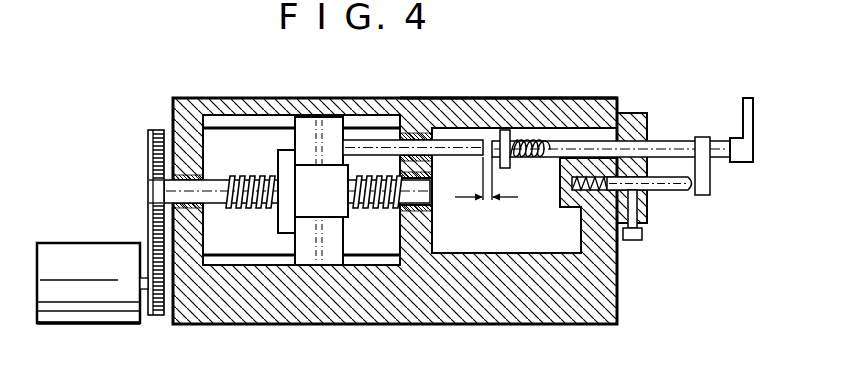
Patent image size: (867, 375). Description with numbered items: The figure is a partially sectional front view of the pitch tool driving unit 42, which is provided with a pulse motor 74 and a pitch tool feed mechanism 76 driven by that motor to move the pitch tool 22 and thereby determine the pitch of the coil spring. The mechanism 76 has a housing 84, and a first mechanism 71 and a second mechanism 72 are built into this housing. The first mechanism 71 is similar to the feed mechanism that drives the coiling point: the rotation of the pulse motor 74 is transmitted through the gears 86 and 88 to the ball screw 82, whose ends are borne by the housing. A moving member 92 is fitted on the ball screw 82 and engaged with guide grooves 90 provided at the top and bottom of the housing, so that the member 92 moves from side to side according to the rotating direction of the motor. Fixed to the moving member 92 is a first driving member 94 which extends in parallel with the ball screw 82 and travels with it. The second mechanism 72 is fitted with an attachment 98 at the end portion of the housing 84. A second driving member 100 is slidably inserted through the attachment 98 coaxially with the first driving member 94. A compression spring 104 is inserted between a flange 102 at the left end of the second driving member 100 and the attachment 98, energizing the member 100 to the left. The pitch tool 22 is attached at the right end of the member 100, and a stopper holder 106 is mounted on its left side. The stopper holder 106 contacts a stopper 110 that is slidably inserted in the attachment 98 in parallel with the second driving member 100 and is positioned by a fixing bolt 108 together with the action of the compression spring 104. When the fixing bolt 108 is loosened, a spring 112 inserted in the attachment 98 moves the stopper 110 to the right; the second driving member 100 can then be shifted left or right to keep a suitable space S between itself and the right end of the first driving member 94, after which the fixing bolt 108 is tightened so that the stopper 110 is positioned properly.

The pitch tool 22 is at (744, 115).
The pitch tool driving unit 42 is at (123, 202).
The first mechanism 71 is at (248, 242).
The second mechanism 72 is at (509, 245).
The pulse motor 74 is at (75, 262).
The pitch tool feed mechanism 76 is at (316, 96).
The ball screw 82 is at (375, 212).
The housing 84 is at (453, 108).
The gear 86 is at (152, 227).
The gear 88 is at (152, 162).
The guide grooves 90 is at (374, 126).
The moving member 92 is at (323, 262).
The first driving member 94 is at (396, 139).
The attachment 98 is at (626, 112).
The second driving member 100 is at (670, 140).
The flange 102 is at (505, 129).
The compression spring 104 is at (542, 137).
The stopper holder 106 is at (711, 178).
The fixing bolt 108 is at (635, 241).
The stopper 110 is at (672, 191).
The spring 112 is at (582, 192).
The space S is at (486, 191).